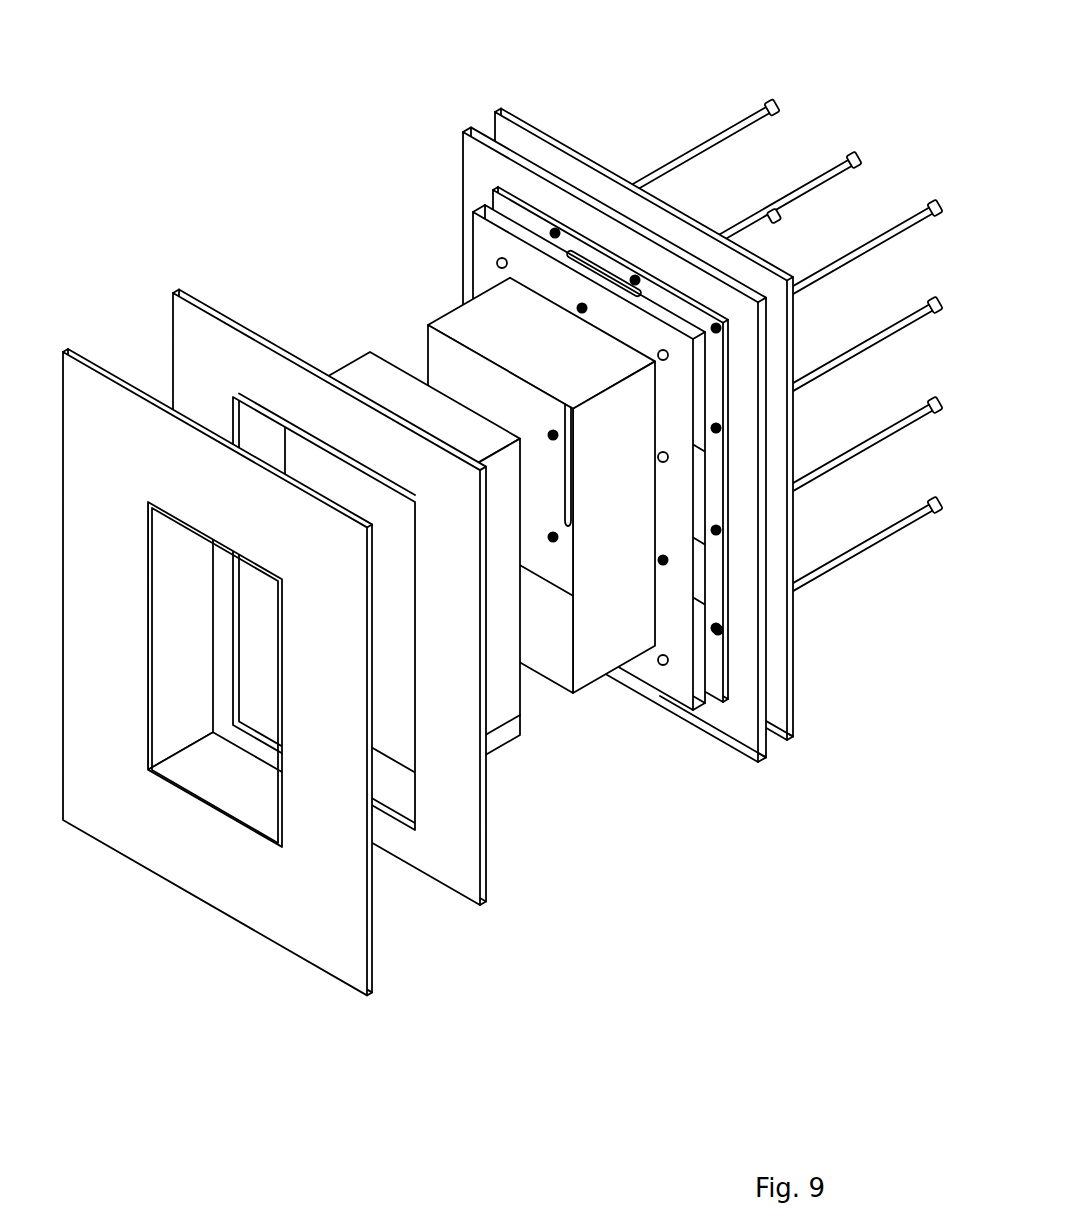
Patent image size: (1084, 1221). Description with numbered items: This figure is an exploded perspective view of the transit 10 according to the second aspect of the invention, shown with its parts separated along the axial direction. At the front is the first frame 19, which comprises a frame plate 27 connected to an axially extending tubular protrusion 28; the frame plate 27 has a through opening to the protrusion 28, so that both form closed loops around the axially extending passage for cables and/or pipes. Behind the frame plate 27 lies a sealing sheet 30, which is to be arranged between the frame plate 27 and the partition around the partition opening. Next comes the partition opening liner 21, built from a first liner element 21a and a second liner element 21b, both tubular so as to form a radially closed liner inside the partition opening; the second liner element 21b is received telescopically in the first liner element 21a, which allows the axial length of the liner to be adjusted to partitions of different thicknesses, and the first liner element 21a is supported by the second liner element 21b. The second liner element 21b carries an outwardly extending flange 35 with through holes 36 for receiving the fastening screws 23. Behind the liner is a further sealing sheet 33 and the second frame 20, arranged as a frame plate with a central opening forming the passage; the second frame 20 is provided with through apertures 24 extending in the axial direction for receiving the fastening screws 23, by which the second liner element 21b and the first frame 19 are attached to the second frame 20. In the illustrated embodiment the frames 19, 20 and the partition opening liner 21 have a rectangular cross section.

The transit 10 is at (245, 75).
The first frame 19 is at (65, 328).
The second frame 20 is at (553, 140).
The partition opening liner 21 is at (403, 310).
The first liner element 21a is at (493, 710).
The second liner element 21b is at (592, 673).
The fastening screws 23 is at (733, 128).
The through apertures 24 is at (727, 627).
The frame plate 27 is at (217, 672).
The tubular protrusion 28 is at (185, 772).
The sealing sheet 30 is at (450, 893).
The sealing sheet 33 is at (470, 153).
The flange 35 is at (683, 660).
The through holes 36 is at (664, 498).